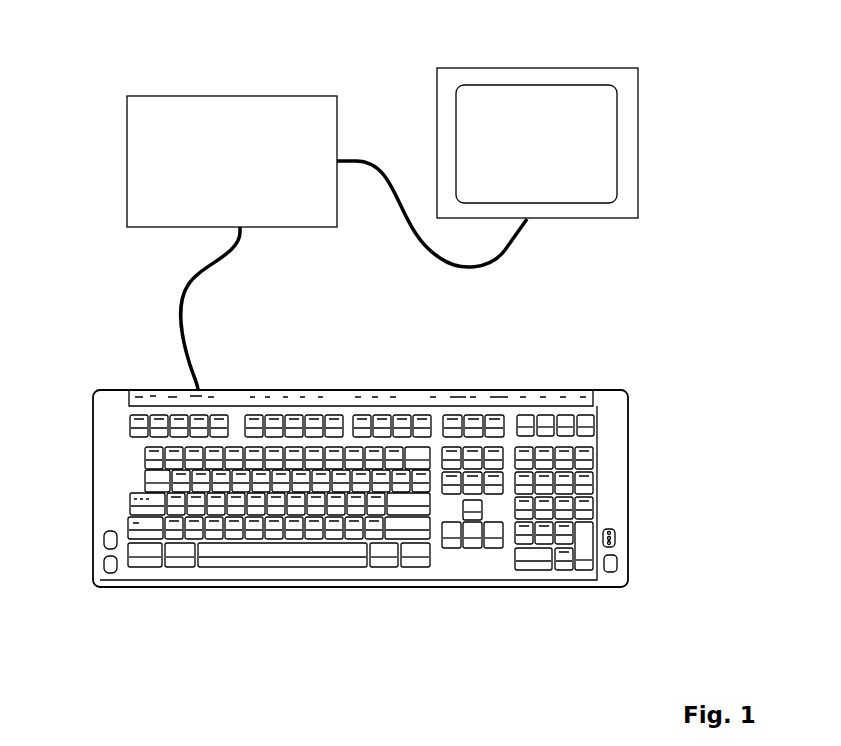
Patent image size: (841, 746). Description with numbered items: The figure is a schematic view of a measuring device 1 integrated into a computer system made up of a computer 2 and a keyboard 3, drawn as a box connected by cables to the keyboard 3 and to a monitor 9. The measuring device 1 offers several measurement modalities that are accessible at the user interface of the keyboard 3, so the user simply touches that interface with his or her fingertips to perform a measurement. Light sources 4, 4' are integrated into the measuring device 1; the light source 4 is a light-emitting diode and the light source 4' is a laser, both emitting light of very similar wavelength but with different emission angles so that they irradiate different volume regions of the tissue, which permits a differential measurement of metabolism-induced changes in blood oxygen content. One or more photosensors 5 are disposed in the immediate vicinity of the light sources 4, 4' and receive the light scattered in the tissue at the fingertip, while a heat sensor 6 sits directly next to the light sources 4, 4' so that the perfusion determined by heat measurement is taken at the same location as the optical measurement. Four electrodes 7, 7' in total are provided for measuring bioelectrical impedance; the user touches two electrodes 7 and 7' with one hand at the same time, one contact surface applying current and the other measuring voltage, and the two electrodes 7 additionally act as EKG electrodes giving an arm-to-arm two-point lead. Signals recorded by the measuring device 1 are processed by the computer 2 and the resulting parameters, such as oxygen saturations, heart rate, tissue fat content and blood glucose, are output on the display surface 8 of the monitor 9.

The measuring device 1 is at (618, 516).
The computer 2 is at (232, 177).
The keyboard 3 is at (478, 388).
The light source 4 is at (666, 558).
The light source 4' is at (609, 541).
The photosensor 5 is at (611, 535).
The heat sensor 6 is at (612, 545).
The electrode 7 is at (338, 604).
The electrode 7' is at (365, 523).
The display surface 8 is at (599, 110).
The monitor 9 is at (537, 68).